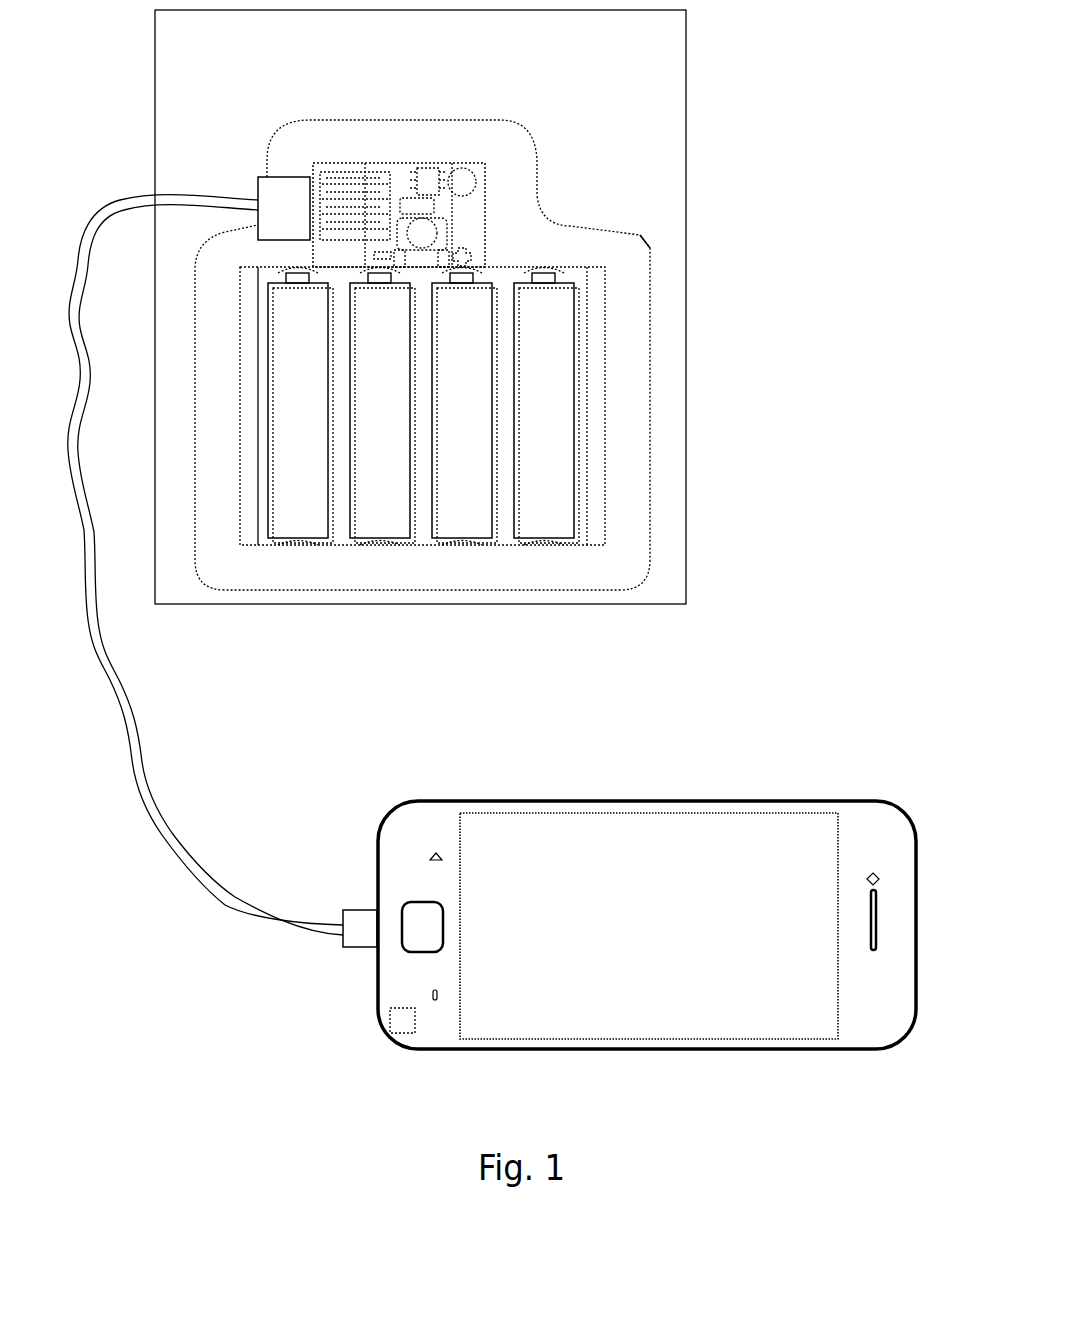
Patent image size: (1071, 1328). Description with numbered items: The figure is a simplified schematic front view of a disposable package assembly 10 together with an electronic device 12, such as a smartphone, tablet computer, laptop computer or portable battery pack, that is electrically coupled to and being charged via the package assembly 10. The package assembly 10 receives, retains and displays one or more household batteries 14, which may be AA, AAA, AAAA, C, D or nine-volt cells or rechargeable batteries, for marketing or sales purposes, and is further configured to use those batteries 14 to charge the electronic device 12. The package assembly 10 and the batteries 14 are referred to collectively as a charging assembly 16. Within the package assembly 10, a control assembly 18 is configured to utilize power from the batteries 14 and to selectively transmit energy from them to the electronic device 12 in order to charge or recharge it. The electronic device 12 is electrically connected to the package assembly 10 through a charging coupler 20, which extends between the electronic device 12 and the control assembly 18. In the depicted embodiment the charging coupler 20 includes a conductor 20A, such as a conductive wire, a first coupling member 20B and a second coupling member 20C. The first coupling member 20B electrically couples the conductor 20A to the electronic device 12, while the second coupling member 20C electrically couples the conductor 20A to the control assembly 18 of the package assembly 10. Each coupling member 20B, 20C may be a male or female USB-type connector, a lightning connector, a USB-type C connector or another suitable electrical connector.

The disposable package assembly 10 is at (690, 237).
The electronic device 12 is at (763, 797).
The household batteries 14 is at (552, 353).
The charging assembly 16 is at (816, 138).
The control assembly 18 is at (425, 165).
The charging coupler 20 is at (217, 907).
The conductor 20A is at (143, 787).
The first coupling member 20B is at (360, 928).
The second coupling member 20C is at (280, 198).